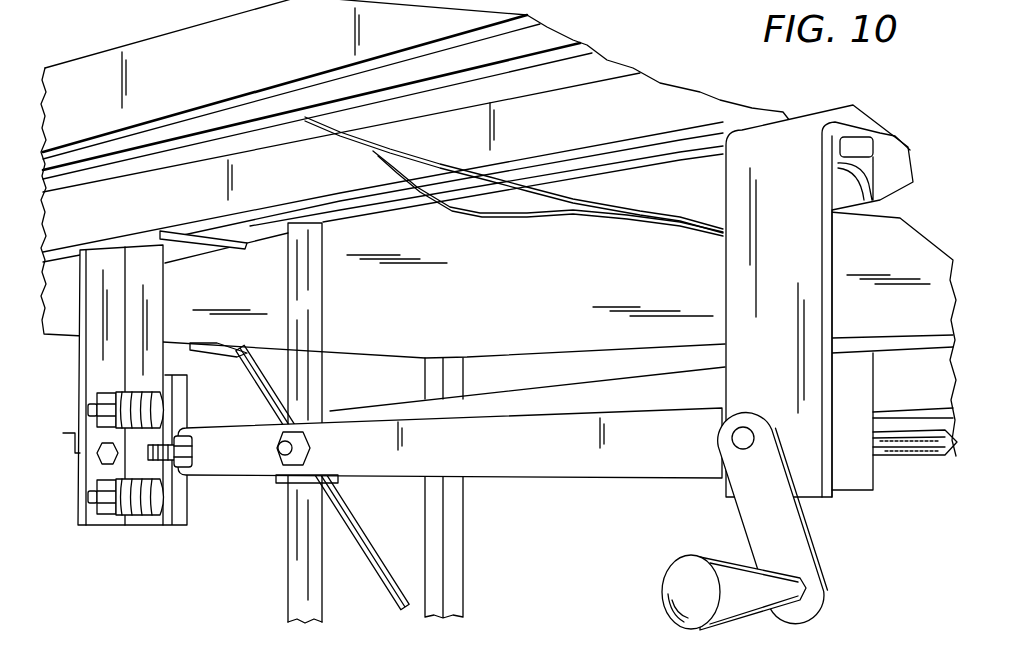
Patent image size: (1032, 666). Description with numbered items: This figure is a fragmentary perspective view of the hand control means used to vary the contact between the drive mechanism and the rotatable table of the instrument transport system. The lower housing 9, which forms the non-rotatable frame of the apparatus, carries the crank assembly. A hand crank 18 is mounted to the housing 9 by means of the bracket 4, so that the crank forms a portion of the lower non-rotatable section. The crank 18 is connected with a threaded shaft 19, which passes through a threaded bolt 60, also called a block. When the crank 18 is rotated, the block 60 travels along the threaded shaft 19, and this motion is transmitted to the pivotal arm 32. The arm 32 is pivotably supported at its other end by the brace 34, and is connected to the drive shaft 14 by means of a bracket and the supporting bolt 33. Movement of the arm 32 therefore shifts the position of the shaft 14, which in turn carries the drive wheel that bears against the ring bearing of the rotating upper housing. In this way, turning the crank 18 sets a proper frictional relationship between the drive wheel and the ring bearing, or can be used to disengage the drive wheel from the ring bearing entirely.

The bracket 4 is at (790, 291).
The lower housing 9 is at (110, 219).
The shaft 14 is at (333, 640).
The crank 18 is at (663, 600).
The threaded shaft 19 is at (946, 458).
The pivotal arm 32 is at (558, 476).
The supporting bolt 33 is at (282, 477).
The brace 34 is at (86, 526).
The threaded bolt 60 is at (868, 473).